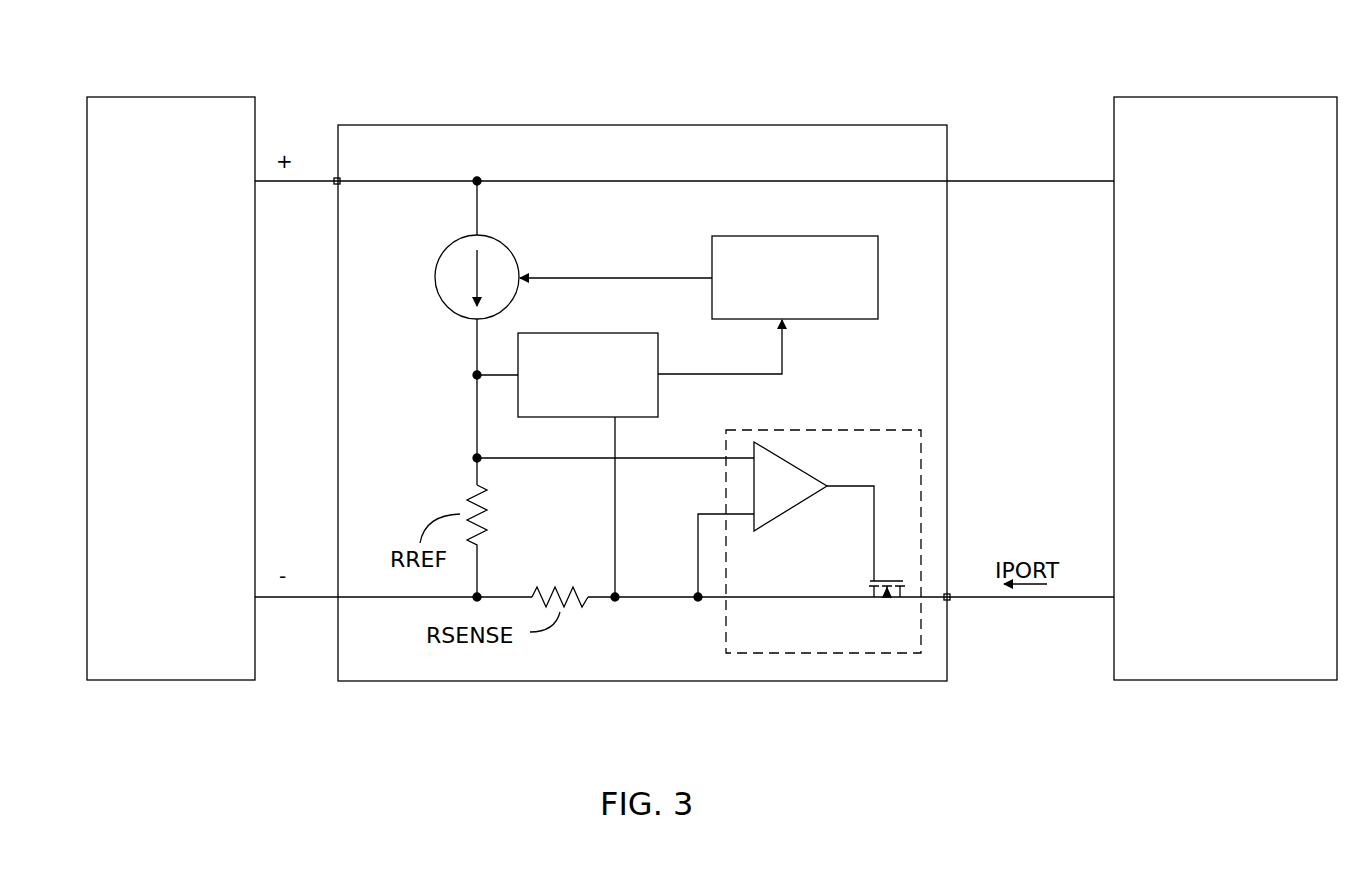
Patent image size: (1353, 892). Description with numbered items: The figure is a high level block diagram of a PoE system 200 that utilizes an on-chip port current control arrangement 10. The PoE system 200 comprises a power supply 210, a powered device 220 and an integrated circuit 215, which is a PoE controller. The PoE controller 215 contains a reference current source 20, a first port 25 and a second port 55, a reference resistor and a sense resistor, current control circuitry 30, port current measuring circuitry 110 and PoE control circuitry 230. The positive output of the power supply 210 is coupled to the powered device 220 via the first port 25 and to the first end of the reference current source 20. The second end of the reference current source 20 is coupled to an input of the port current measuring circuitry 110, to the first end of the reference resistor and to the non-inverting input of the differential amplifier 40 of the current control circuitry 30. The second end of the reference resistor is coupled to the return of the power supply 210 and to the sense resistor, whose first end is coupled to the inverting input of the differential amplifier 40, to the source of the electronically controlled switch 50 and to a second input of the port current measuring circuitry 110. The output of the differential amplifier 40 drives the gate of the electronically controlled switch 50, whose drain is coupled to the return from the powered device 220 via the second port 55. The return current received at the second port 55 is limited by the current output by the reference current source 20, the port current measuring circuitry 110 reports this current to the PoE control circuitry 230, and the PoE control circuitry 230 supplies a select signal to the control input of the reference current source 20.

The on-chip port current control arrangement 10 is at (397, 229).
The reference current source 20 is at (505, 245).
The port 25 is at (333, 181).
The current control circuitry 30 is at (848, 430).
The differential amplifier 40 is at (795, 465).
The electronically controlled switch 50 is at (868, 578).
The port 55 is at (952, 600).
The port current measuring circuitry 110 is at (585, 333).
The PoE system 200 is at (880, 89).
The power supply 210 is at (170, 681).
The integrated circuit 215 is at (643, 124).
The powered device 220 is at (1198, 681).
The PoE control circuitry 230 is at (878, 277).